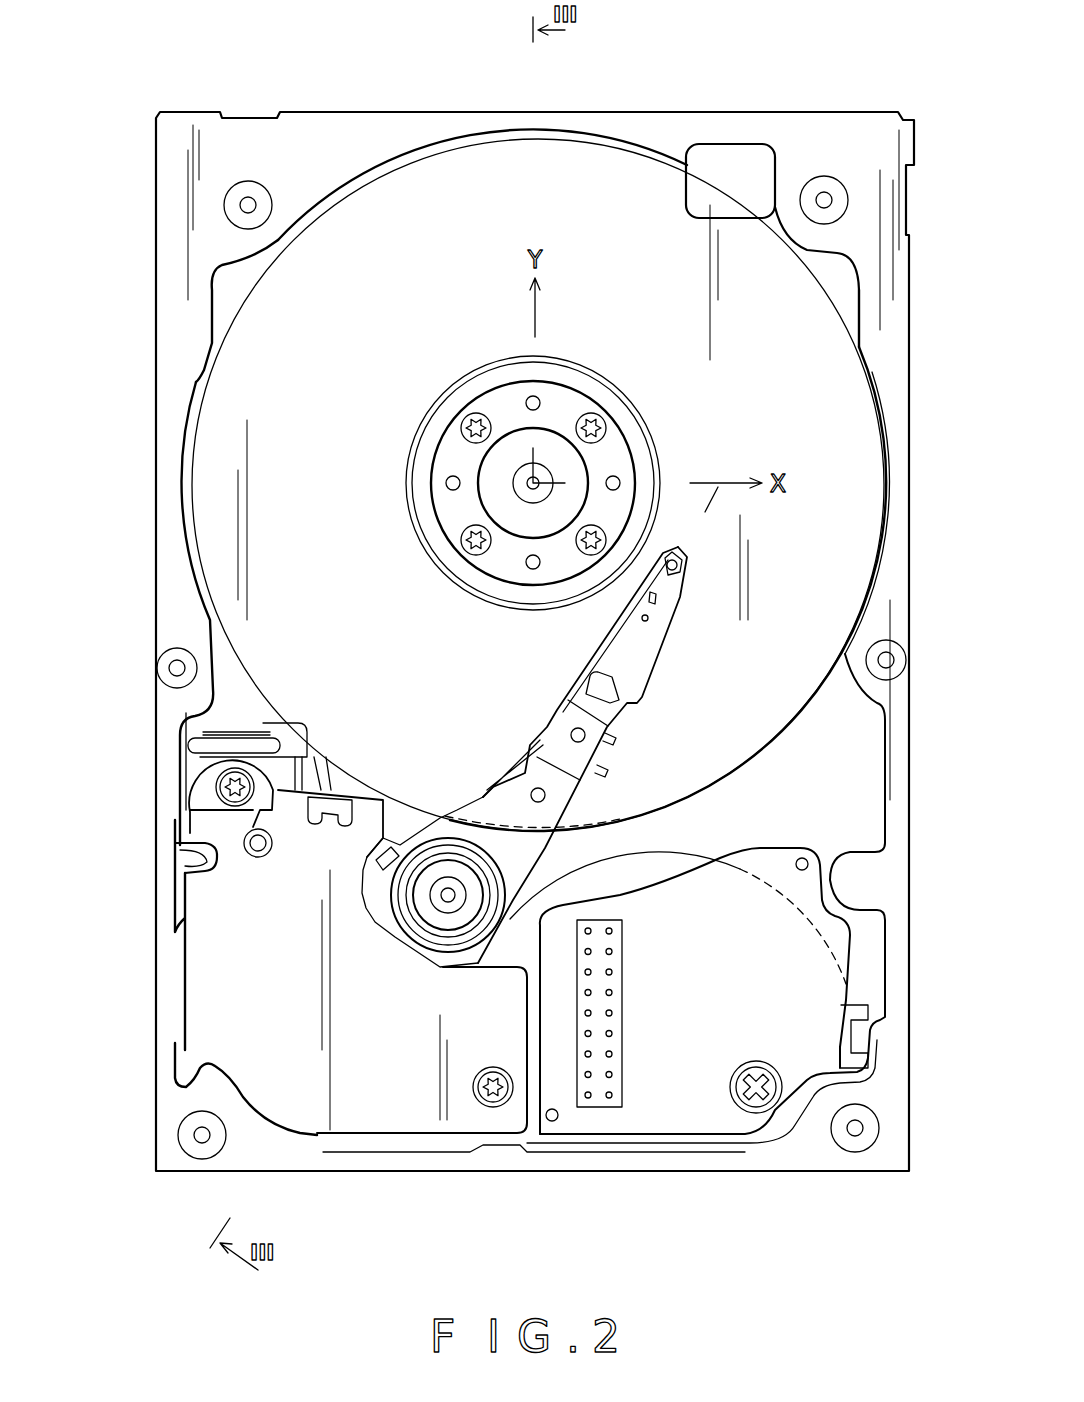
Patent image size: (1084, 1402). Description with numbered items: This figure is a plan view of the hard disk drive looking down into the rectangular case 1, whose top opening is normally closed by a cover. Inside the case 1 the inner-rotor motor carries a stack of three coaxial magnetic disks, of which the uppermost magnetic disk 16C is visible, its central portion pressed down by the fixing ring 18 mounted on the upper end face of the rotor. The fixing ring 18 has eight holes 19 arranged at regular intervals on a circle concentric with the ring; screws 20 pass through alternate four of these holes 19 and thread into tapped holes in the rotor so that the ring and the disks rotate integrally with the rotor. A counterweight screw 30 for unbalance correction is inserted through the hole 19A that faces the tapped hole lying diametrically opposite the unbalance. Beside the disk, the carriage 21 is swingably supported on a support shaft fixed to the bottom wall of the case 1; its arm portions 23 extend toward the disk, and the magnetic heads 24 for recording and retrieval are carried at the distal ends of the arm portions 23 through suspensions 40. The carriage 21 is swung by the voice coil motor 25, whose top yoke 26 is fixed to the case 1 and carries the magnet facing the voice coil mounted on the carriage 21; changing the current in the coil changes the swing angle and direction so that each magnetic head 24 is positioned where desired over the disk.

The case 1 is at (158, 628).
The magnetic disk 16C is at (205, 488).
The fixing ring 18 is at (452, 528).
The holes 19 is at (528, 400).
The hole 19A is at (533, 570).
The screws 20 is at (600, 418).
The carriage 21 is at (568, 786).
The arm portions 23 is at (477, 812).
The magnetic heads 24 is at (690, 563).
The voice coil motor 25 is at (373, 1135).
The top yoke 26 is at (198, 1012).
The screw 30 is at (522, 580).
The suspensions 40 is at (635, 677).